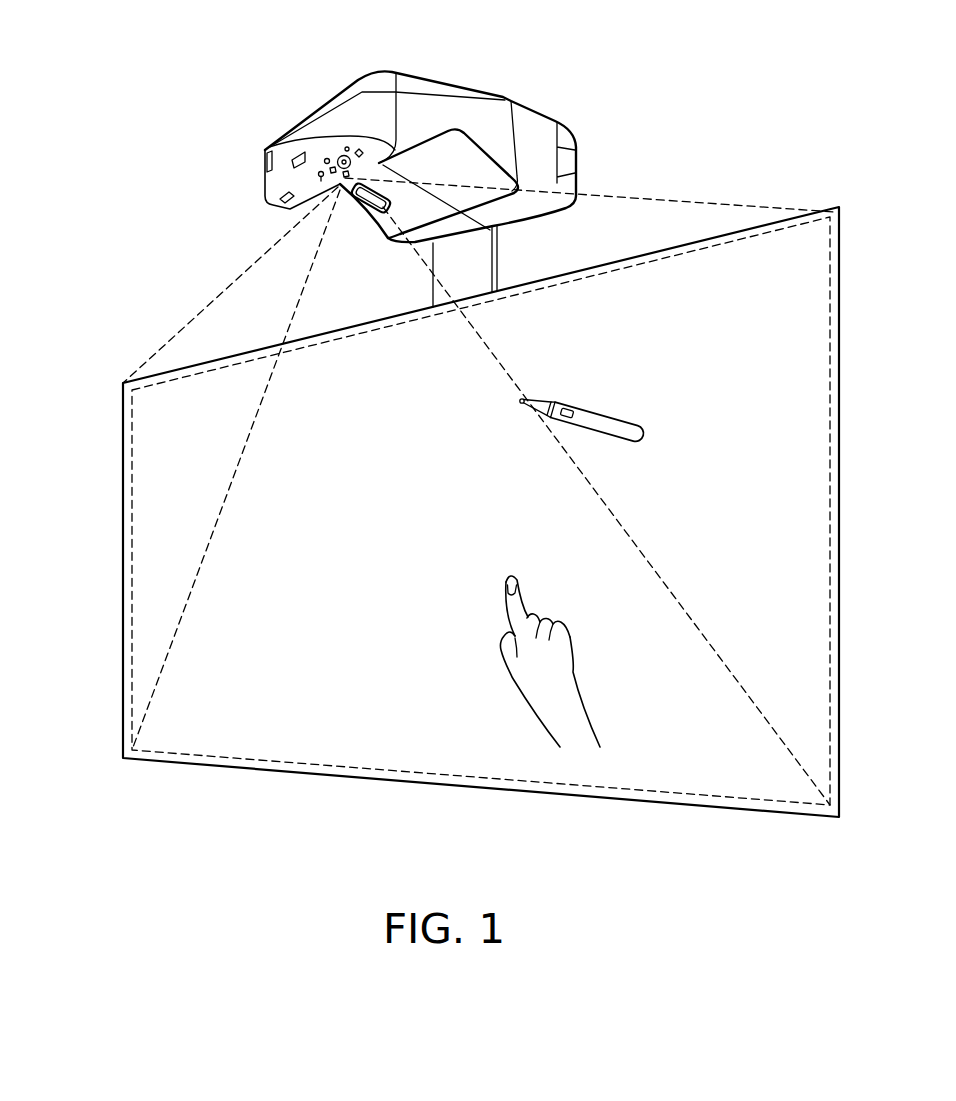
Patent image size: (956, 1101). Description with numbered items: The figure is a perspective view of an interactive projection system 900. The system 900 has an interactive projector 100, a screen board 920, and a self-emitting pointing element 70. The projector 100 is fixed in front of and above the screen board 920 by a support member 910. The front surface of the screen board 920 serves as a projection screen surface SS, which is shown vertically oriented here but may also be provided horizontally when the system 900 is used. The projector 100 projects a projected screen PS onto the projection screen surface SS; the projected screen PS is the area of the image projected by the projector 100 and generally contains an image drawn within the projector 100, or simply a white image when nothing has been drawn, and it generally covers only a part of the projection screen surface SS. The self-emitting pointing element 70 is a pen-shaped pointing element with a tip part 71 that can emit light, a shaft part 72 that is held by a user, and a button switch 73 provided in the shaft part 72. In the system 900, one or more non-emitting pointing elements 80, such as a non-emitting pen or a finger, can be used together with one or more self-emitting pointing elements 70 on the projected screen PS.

The interactive projection system 900 is at (155, 124).
The interactive projector 100 is at (456, 85).
The support member 910 is at (499, 258).
The screen board 920 is at (818, 210).
The projected screen PS is at (123, 442).
The projection screen surface SS is at (123, 577).
The self-emitting pointing element 70 is at (590, 408).
The tip part 71 is at (523, 399).
The shaft part 72 is at (619, 443).
The button switch 73 is at (562, 420).
The non-emitting pointing element 80 is at (516, 602).